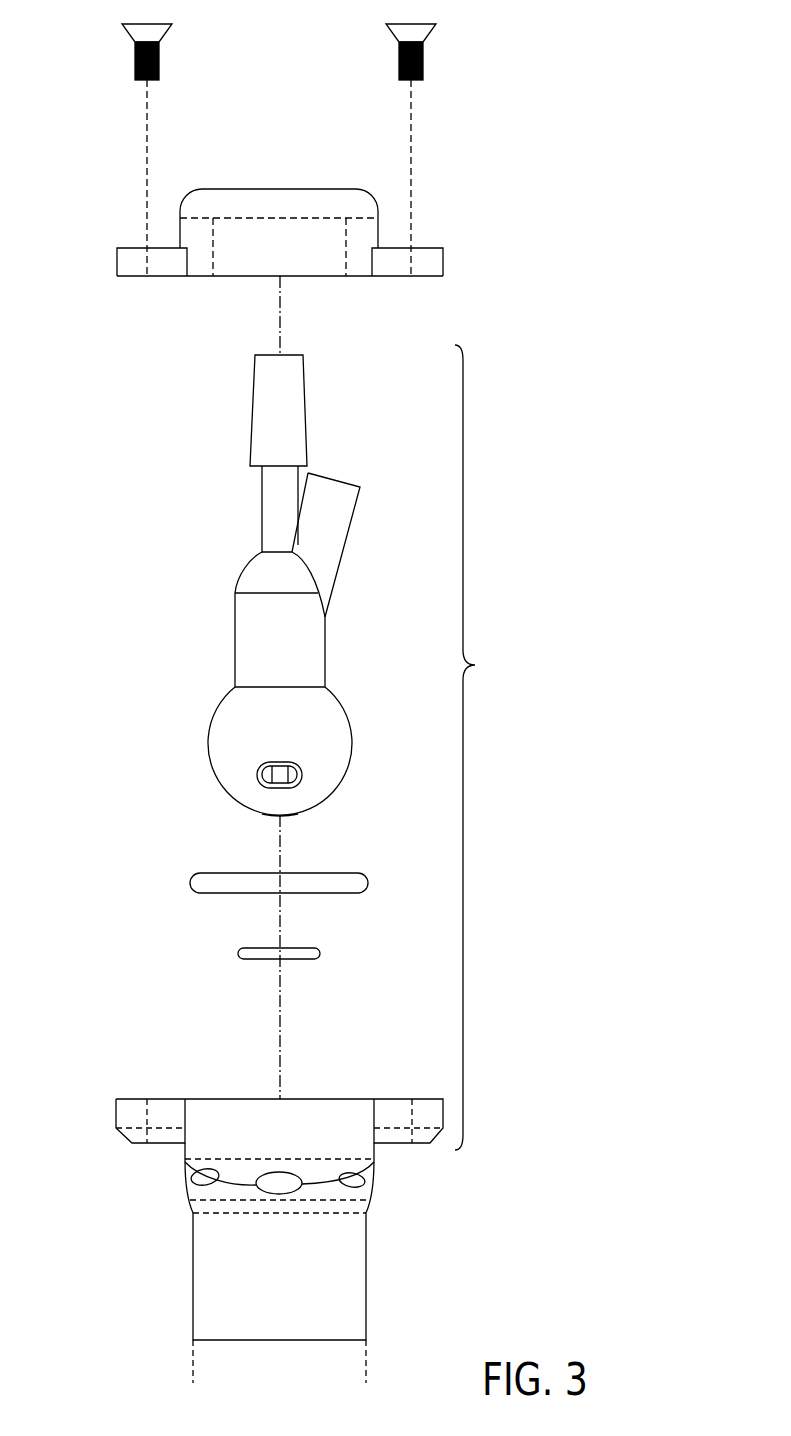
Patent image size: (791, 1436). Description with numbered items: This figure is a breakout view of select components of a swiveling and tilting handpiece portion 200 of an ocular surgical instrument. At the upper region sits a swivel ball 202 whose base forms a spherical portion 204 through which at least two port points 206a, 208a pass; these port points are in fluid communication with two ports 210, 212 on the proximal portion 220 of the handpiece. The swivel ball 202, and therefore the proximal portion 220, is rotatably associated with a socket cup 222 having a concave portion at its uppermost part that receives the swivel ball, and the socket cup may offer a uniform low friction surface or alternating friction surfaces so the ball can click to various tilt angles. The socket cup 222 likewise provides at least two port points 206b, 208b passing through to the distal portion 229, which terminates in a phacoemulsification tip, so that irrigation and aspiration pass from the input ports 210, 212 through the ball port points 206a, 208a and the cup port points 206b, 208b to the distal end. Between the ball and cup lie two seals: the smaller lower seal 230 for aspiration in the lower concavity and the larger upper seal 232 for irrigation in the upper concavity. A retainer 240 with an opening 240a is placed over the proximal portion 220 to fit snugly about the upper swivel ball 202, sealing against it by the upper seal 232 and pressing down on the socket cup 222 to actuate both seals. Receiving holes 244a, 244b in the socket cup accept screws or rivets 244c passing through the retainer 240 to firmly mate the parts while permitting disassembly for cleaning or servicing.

The handpiece portion 200 is at (585, 241).
The swivel ball 202 is at (215, 713).
The spherical portion 204 is at (312, 792).
The port point 206a is at (268, 812).
The port point 206b is at (300, 1186).
The port point 208a is at (342, 771).
The port point 208b is at (364, 1180).
The port 210 is at (262, 487).
The port 212 is at (338, 567).
The proximal portion 220 is at (490, 747).
The socket cup 222 is at (155, 1145).
The distal portion 229 is at (366, 1353).
The lower seal 230 is at (238, 957).
The upper seal 232 is at (192, 878).
The retainer 240 is at (365, 232).
The opening 240a is at (213, 218).
The receiving hole 244a is at (130, 248).
The receiving hole 244b is at (432, 248).
The screws or rivets 244c is at (135, 65).